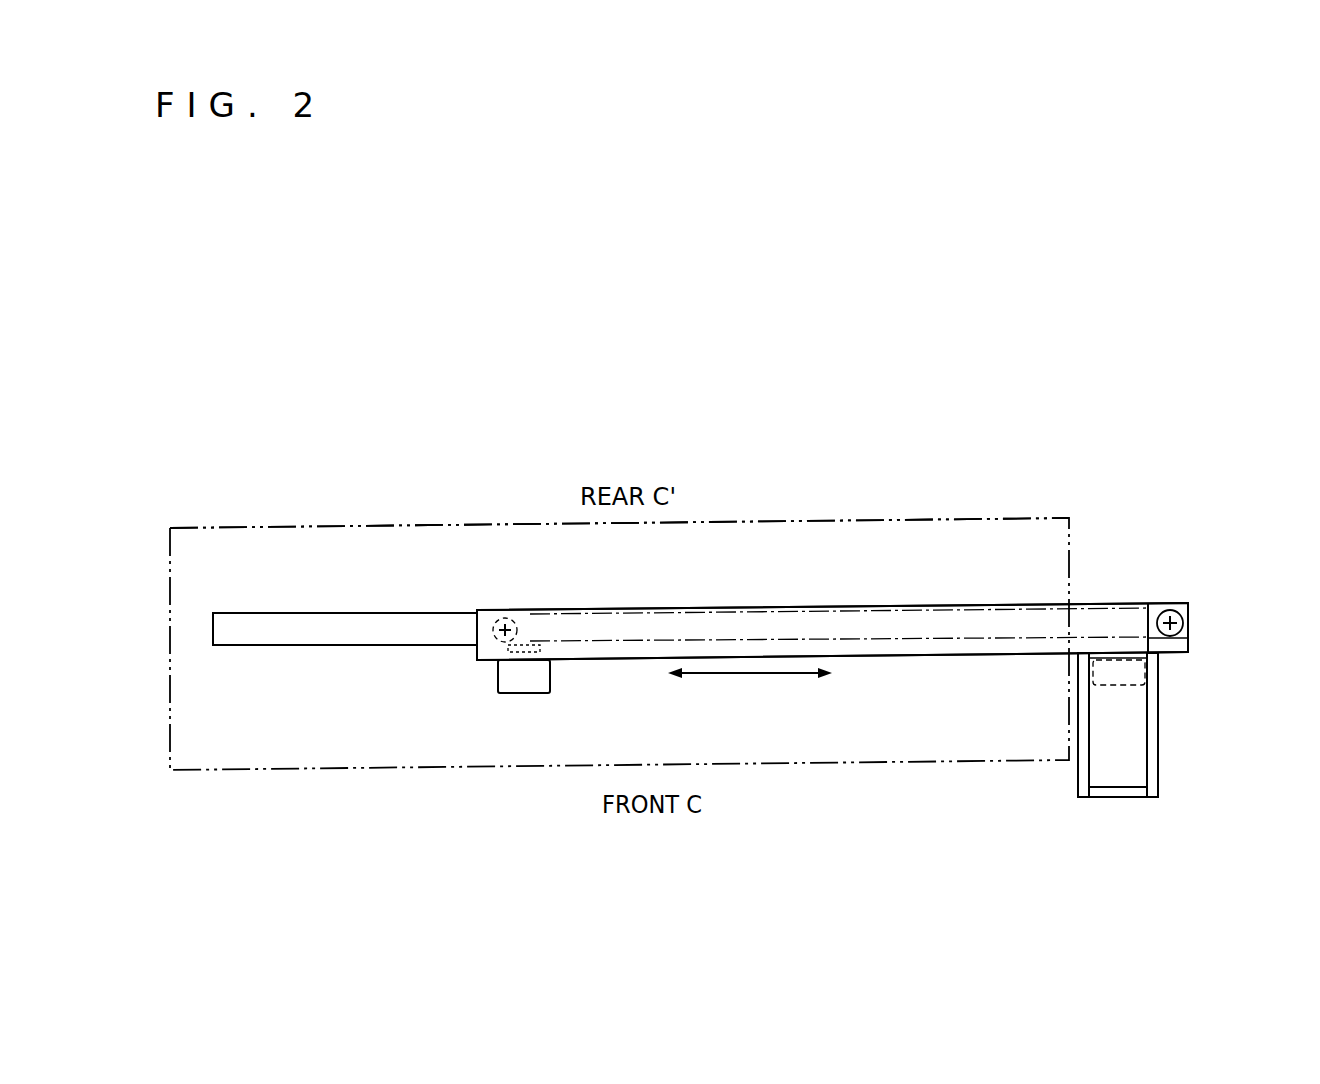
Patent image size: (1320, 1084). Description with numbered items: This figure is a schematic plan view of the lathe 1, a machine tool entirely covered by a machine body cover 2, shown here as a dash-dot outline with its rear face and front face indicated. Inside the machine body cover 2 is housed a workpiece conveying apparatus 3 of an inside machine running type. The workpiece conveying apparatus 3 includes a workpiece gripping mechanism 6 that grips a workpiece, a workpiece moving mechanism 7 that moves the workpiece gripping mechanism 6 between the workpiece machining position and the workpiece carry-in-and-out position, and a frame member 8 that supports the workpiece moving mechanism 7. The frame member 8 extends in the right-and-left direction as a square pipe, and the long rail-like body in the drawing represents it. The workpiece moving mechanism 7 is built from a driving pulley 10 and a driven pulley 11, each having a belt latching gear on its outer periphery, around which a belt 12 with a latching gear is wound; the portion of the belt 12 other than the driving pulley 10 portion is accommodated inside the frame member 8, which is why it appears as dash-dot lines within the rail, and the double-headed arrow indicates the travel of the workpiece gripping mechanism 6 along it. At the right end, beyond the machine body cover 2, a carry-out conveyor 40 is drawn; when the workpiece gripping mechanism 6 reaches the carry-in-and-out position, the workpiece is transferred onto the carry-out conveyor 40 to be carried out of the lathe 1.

The lathe 1 is at (693, 517).
The machine body cover 2 is at (728, 520).
The workpiece conveying apparatus 3 is at (985, 596).
The workpiece gripping mechanism 6 is at (527, 703).
The workpiece moving mechanism 7 is at (846, 608).
The frame member 8 is at (913, 606).
The driving pulley 10 is at (1183, 613).
The driven pulley 11 is at (513, 626).
The belt 12 is at (751, 611).
The carry-out conveyor 40 is at (1155, 737).